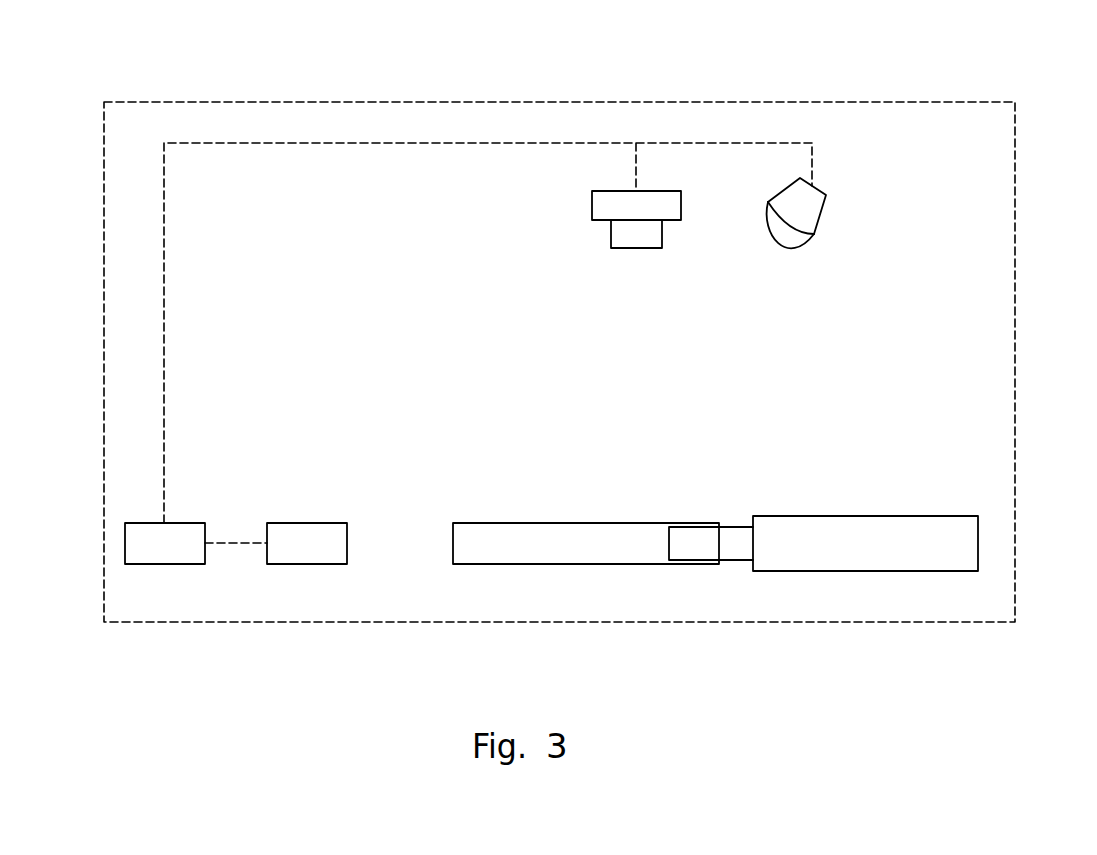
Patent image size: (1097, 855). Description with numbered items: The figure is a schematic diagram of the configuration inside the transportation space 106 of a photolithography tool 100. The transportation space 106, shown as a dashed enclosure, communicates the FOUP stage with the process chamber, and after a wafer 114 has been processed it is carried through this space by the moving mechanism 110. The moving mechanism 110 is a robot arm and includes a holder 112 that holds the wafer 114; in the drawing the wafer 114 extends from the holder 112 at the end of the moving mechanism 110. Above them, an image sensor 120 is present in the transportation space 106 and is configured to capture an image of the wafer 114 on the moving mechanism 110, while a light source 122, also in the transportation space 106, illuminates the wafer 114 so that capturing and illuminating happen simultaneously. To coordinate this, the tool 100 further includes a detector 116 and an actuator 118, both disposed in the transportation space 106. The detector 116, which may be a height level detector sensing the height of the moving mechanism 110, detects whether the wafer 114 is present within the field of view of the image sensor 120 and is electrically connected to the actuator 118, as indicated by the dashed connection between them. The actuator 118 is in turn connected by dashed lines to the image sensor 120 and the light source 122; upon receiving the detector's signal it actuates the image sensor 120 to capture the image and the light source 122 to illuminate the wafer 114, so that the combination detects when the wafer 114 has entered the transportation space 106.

The photolithography tool 100 is at (78, 70).
The transportation space 106 is at (953, 622).
The moving mechanism 110 is at (978, 545).
The holder 112 is at (737, 560).
The wafer 114 is at (555, 564).
The detector 116 is at (308, 564).
The actuator 118 is at (165, 564).
The image sensor 120 is at (592, 206).
The light source 122 is at (819, 218).